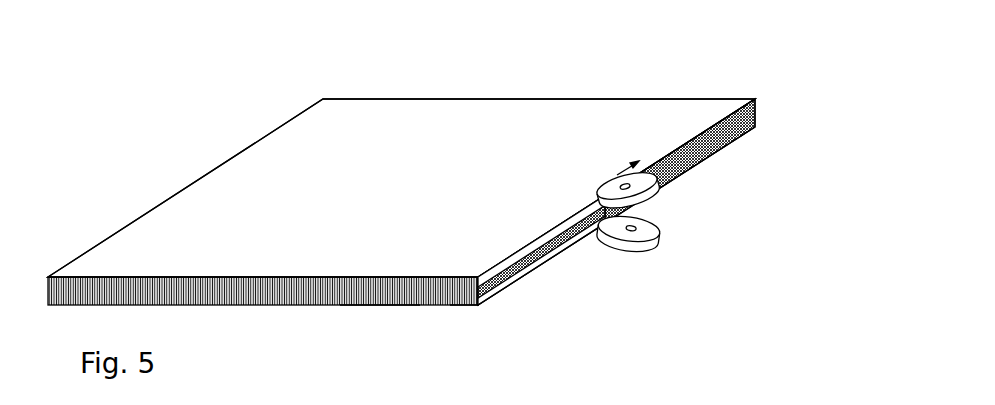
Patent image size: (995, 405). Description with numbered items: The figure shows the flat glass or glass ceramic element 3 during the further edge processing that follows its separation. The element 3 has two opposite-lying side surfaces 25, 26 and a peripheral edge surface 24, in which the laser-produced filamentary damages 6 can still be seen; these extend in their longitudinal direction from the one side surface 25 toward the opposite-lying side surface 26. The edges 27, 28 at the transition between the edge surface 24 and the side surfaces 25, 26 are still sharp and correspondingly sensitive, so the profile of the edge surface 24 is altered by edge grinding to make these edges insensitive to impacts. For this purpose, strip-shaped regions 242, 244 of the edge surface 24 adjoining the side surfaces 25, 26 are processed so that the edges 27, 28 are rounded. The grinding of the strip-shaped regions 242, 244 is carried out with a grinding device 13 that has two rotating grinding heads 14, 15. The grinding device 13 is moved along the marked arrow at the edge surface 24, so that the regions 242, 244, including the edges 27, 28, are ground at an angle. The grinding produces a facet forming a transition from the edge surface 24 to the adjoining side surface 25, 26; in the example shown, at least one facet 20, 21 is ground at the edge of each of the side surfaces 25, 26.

The glass or glass ceramic element 3 is at (86, 182).
The side surface 25 is at (284, 167).
The edge 27 is at (712, 125).
The strip-shaped region 242 is at (713, 153).
The strip-shaped region 244 is at (660, 182).
The rotating grinding head 14 is at (660, 187).
The grinding device 13 is at (680, 232).
The rotating grinding head 15 is at (652, 250).
The facet 20 is at (497, 270).
The facet 21 is at (497, 293).
The edge surface 24 is at (313, 296).
The side surface 26 is at (393, 308).
The edge 28 is at (363, 308).
The filamentary damages 6 is at (463, 307).